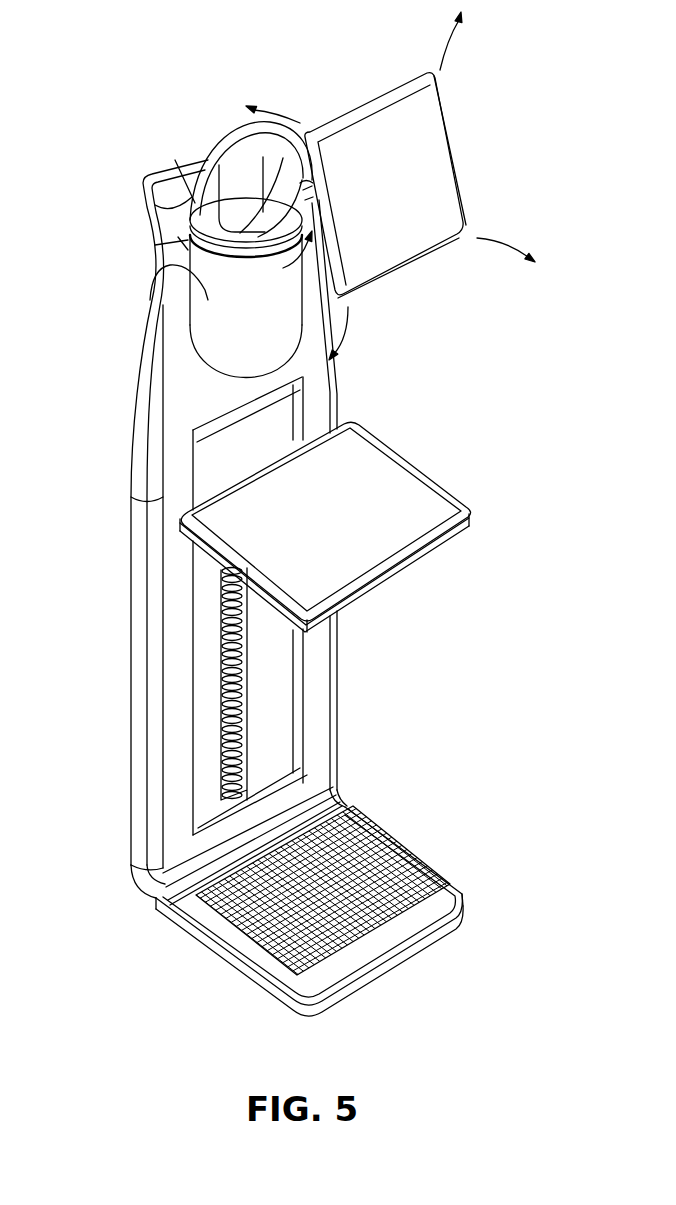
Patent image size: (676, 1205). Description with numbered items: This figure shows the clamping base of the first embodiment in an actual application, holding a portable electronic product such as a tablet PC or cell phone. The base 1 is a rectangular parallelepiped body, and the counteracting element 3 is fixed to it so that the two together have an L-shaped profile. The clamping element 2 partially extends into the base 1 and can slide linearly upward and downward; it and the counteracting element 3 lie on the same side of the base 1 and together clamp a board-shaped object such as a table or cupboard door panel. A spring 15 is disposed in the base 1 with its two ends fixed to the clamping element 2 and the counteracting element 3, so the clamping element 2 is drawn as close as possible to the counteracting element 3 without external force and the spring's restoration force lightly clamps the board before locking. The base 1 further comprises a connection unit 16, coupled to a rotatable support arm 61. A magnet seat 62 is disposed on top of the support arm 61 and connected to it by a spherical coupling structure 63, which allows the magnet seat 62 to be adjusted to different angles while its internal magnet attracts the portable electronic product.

The base 1 is at (318, 392).
The clamping element 2 is at (455, 482).
The counteracting element 3 is at (443, 942).
The spring 15 is at (227, 653).
The connection unit 16 is at (227, 313).
The support arm 61 is at (252, 147).
The magnet seat 62 is at (428, 140).
The spherical coupling structure 63 is at (310, 190).